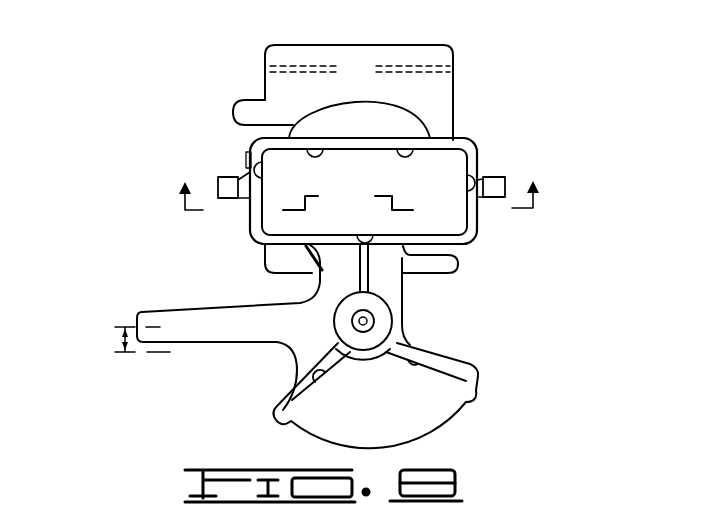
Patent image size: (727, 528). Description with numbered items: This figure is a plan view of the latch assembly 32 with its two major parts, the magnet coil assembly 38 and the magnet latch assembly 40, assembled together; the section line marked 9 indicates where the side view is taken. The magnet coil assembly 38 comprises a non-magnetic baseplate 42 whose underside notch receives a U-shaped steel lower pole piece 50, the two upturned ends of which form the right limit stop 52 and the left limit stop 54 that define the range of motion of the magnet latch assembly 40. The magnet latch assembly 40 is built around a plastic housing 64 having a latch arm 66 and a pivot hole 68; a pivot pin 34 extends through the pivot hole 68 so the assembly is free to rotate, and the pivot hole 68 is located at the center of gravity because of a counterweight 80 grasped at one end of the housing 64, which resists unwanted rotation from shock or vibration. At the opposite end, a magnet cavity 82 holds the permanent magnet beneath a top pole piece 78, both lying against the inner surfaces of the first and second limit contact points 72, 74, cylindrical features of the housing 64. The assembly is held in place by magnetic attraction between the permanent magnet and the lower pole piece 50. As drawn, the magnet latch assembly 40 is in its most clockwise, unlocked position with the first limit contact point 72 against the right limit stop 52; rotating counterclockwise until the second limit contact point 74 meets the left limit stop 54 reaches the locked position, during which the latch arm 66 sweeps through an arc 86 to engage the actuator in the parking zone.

The latch assembly 32 is at (333, 157).
The pivot pin 34 is at (365, 321).
The magnet coil assembly 38 is at (288, 47).
The magnet latch assembly 40 is at (230, 327).
The baseplate 42 is at (420, 52).
The lower pole piece 50 is at (245, 180).
The right limit stop 52 is at (505, 180).
The left limit stop 54 is at (218, 181).
The housing 64 is at (382, 268).
The latch arm 66 is at (175, 322).
The pivot hole 68 is at (345, 318).
The first limit contact point 72 is at (355, 174).
The second limit contact point 74 is at (248, 165).
The top pole piece 78 is at (333, 172).
The counterweight 80 is at (420, 413).
The magnet cavity 82 is at (415, 130).
The arc 86 is at (118, 338).
The section line 9 is at (358, 186).